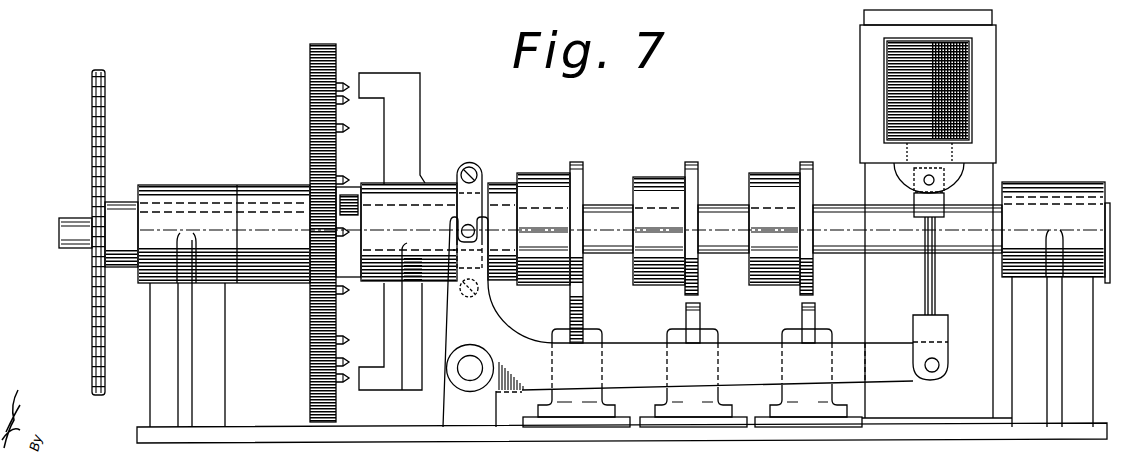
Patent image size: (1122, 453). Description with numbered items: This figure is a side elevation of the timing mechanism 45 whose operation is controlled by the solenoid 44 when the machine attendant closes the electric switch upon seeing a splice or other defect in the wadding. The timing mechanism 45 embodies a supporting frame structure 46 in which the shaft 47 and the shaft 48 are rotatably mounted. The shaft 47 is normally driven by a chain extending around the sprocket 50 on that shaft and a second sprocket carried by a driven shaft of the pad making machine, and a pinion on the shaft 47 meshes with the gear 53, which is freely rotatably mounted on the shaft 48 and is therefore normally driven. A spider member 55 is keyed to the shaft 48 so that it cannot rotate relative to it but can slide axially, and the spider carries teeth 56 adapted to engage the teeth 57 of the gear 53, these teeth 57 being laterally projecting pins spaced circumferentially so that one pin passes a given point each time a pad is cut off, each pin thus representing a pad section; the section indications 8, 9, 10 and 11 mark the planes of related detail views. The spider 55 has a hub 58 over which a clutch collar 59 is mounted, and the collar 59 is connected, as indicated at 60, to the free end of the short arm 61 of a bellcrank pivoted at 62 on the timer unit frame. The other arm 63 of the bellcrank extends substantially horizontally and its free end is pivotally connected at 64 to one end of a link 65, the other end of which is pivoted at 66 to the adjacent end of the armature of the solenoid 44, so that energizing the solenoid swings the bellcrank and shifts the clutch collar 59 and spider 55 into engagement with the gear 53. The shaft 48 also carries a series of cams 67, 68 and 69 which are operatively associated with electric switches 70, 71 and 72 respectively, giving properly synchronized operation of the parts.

The section line 8- 8 is at (590, 153).
The section line 9- 9 is at (708, 153).
The section line 10- 10 is at (821, 153).
The section line 11- 11 is at (360, 160).
The solenoid 44 is at (886, 84).
The timing mechanism 45 is at (238, 156).
The supporting frame structure 46 is at (222, 353).
The shaft 47 is at (73, 220).
The shaft 48 is at (136, 256).
The sprocket 50 is at (100, 312).
The gear 53 is at (326, 46).
The spider member 55 is at (421, 134).
The teeth 56 is at (372, 76).
The teeth 57 is at (345, 82).
The hub 58 is at (458, 168).
The clutch collar 59 is at (478, 190).
The connection 60 is at (475, 231).
The short arm 61 is at (492, 300).
The pivot 62 is at (463, 372).
The arm 63 is at (738, 383).
The pivotal connection 64 is at (938, 369).
The link 65 is at (938, 293).
The pivot 66 is at (935, 181).
The cam 67 is at (806, 162).
The cam 68 is at (691, 162).
The cam 69 is at (575, 162).
The electric switch 70 is at (796, 330).
The electric switch 71 is at (677, 330).
The electric switch 72 is at (561, 330).